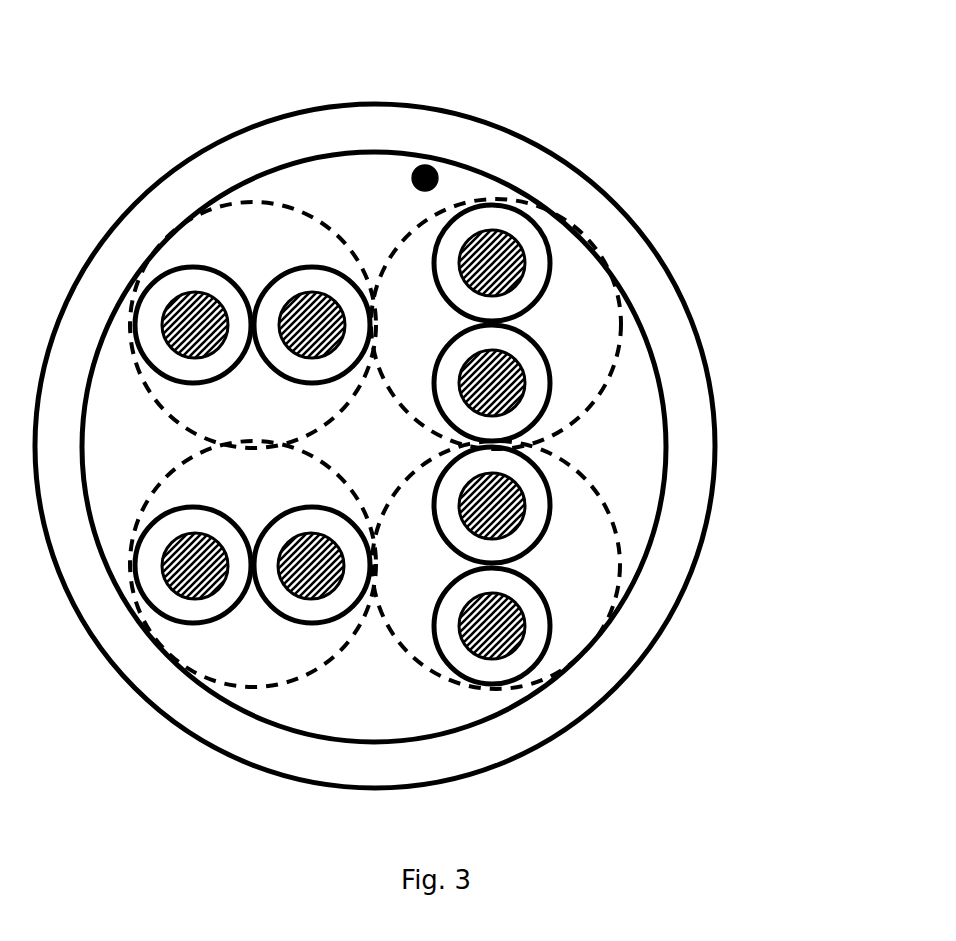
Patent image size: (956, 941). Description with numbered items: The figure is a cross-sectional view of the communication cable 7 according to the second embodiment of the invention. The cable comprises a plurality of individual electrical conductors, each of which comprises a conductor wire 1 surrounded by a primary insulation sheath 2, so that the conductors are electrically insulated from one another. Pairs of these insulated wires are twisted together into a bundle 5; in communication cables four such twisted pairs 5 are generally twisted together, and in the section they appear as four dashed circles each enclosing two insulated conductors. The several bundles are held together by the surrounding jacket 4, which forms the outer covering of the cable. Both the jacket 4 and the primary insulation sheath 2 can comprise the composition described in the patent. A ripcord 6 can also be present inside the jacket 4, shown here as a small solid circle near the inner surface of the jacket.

The conductor wire 1 is at (554, 246).
The primary insulation sheath 2 is at (602, 371).
The jacket 4 is at (631, 724).
The bundle 5 is at (643, 570).
The ripcord 6 is at (466, 130).
The communication cable 7 is at (170, 96).